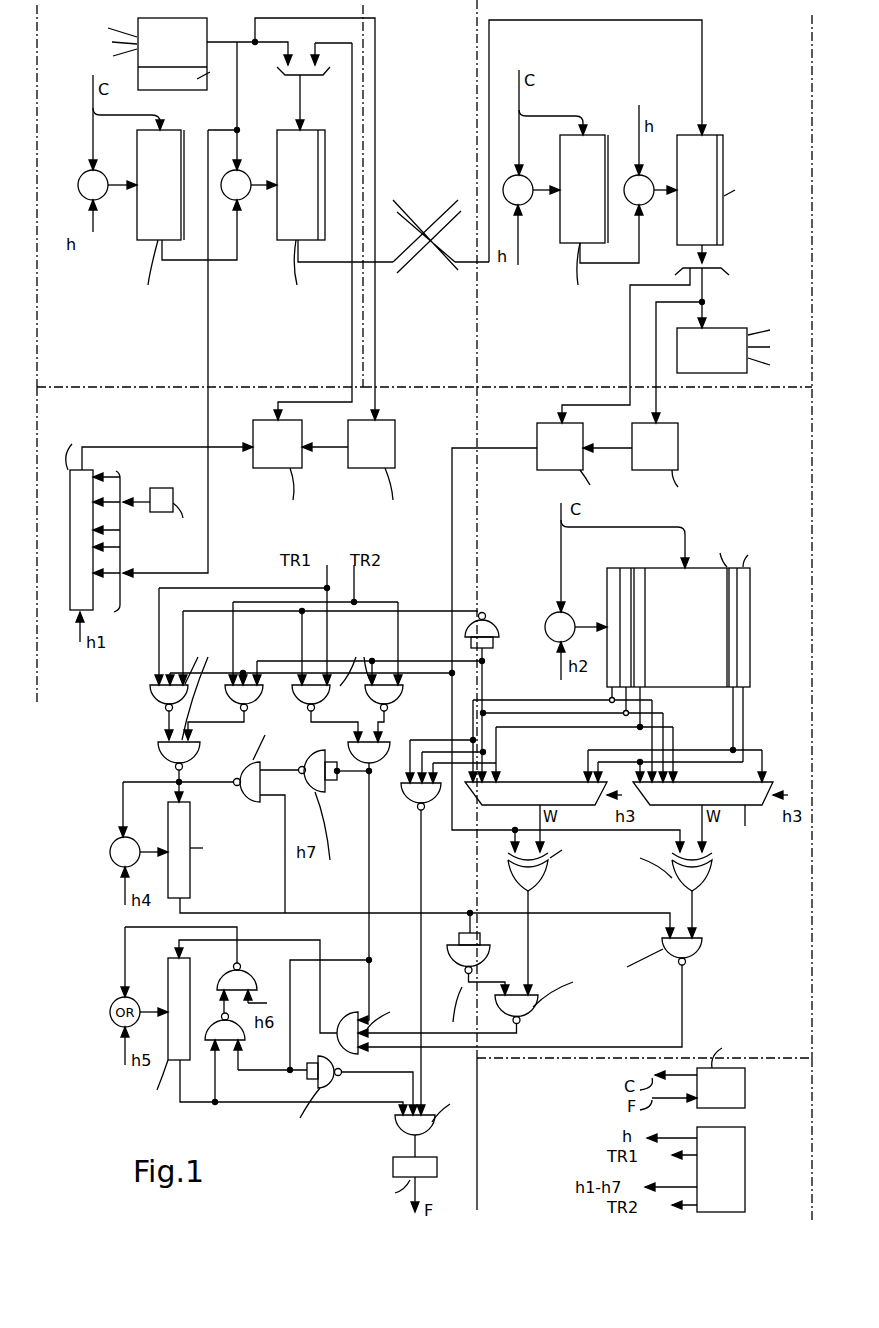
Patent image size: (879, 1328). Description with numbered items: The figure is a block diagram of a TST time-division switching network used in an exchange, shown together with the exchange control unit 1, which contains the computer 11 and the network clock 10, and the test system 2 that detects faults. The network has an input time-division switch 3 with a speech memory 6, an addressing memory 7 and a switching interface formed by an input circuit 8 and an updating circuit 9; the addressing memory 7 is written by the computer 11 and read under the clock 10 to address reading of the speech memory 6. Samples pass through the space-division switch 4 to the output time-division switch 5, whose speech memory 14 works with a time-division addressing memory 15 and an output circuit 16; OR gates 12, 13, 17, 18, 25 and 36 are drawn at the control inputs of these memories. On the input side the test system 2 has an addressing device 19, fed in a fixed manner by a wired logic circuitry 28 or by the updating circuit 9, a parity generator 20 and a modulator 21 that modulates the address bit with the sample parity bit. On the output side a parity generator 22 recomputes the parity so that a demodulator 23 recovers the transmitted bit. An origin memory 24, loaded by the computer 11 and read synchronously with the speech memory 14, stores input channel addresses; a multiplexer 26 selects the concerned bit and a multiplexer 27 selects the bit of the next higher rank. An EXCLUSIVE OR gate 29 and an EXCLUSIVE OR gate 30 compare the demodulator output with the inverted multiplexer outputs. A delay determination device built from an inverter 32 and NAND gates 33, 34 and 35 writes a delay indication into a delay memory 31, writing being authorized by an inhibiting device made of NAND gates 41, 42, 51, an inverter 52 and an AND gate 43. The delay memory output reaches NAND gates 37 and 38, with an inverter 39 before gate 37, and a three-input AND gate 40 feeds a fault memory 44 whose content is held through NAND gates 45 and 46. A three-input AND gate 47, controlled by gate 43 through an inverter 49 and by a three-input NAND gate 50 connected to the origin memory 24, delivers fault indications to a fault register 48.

The exchange control unit 1 is at (644, 1140).
The test system 2 is at (424, 536).
The input time-division switch 3 is at (200, 196).
The space-division switch 4 is at (441, 293).
The output time-division switch 5 is at (587, 193).
The speech memory 6 is at (287, 240).
The addressing memory 7 is at (150, 240).
The input circuit 8 is at (207, 28).
The updating circuit 9 is at (185, 90).
The network clock 10 is at (745, 1133).
The computer 11 is at (745, 1088).
The OR gate 12 is at (257, 165).
The OR gate 13 is at (79, 181).
The speech memory 14 is at (708, 135).
The time-division addressing memory 15 is at (574, 243).
The output circuit 16 is at (748, 370).
The OR gate 17 is at (648, 203).
The OR gate 18 is at (527, 203).
The addressing device 19 is at (68, 612).
The parity generator 20 is at (370, 468).
The modulator 21 is at (270, 468).
The parity generator 22 is at (680, 462).
The demodulator 23 is at (535, 462).
The origin memory 24 is at (750, 633).
The OR gate 25 is at (548, 641).
The multiplexer 26 is at (488, 806).
The multiplexer 27 is at (703, 816).
The wired logic circuitry 28 is at (170, 474).
The EXCLUSIVE OR gate 29 is at (548, 871).
The EXCLUSIVE OR gate 30 is at (712, 871).
The delay memory 31 is at (190, 835).
The inverter 32 is at (489, 612).
The NAND gate 33 is at (150, 703).
The NAND gate 34 is at (225, 703).
The NAND gate 35 is at (158, 754).
The OR gate 36 is at (111, 858).
The NAND gate 37 is at (538, 1013).
The NAND gate 38 is at (702, 955).
The inverter 39 is at (490, 957).
The three-input AND gate 40 is at (345, 1012).
The NAND gate 41 is at (330, 705).
The NAND gate 42 is at (403, 705).
The AND gate 43 is at (385, 762).
The fault memory 44 is at (166, 968).
The NAND gate 45 is at (247, 1046).
The NAND gate 46 is at (231, 968).
The three-input AND gate 47 is at (395, 1128).
The fault register 48 is at (393, 1168).
The inverter 49 is at (340, 1080).
The three-input NAND gate 50 is at (410, 832).
The NAND gate 51 is at (243, 762).
The inverter 52 is at (309, 757).